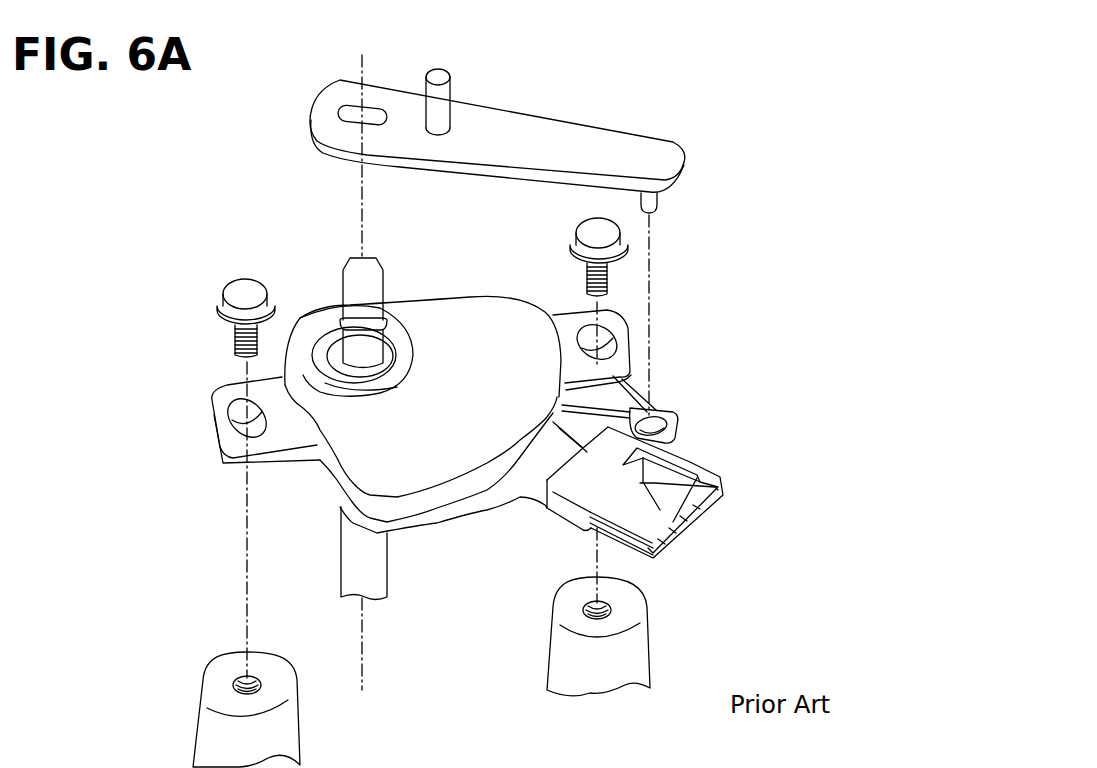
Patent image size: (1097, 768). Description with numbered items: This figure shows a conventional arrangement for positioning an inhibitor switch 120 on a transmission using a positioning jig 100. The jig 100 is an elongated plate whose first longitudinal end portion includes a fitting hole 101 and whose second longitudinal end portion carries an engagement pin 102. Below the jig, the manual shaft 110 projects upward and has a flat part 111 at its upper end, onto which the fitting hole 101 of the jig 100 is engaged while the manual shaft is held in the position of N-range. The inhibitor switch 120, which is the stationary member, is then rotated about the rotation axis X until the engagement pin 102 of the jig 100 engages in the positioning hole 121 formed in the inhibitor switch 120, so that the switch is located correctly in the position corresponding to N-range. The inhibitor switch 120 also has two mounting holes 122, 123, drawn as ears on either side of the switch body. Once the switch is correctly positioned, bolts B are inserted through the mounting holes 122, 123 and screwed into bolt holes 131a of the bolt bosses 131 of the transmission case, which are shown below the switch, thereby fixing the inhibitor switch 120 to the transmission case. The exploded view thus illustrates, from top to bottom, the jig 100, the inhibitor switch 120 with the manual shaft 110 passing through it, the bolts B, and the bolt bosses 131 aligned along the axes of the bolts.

The positioning jig 100 is at (682, 127).
The fitting hole 101 is at (350, 108).
The engagement pin 102 is at (657, 204).
The manual shaft 110 is at (373, 577).
The flat part 111 is at (367, 290).
The inhibitor switch 120 is at (684, 370).
The positioning hole 121 is at (665, 424).
The mounting hole 122 is at (240, 430).
The mounting hole 123 is at (583, 342).
The bolt boss 131 is at (200, 745).
The bolt hole 131a is at (234, 686).
The bolt B is at (243, 288).
The rotation axis X is at (364, 358).